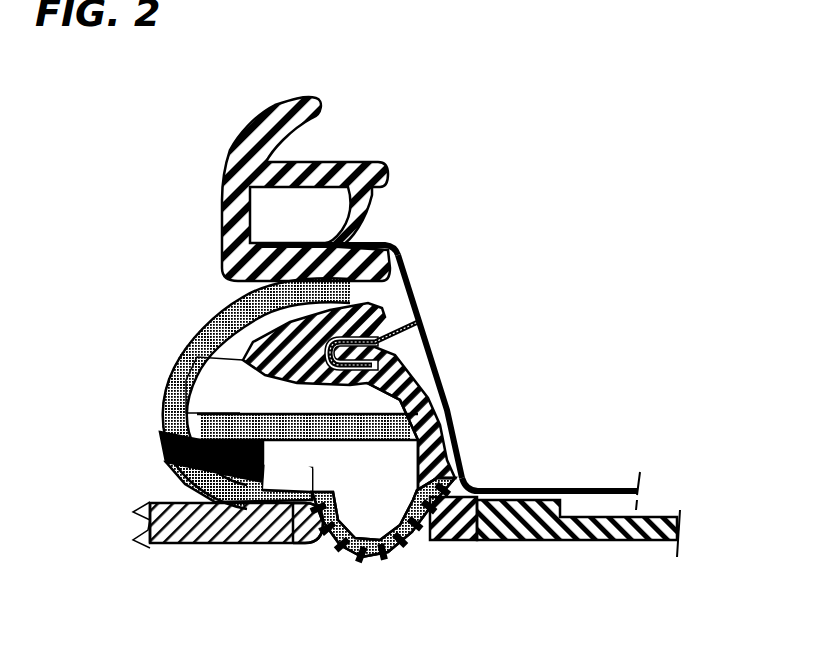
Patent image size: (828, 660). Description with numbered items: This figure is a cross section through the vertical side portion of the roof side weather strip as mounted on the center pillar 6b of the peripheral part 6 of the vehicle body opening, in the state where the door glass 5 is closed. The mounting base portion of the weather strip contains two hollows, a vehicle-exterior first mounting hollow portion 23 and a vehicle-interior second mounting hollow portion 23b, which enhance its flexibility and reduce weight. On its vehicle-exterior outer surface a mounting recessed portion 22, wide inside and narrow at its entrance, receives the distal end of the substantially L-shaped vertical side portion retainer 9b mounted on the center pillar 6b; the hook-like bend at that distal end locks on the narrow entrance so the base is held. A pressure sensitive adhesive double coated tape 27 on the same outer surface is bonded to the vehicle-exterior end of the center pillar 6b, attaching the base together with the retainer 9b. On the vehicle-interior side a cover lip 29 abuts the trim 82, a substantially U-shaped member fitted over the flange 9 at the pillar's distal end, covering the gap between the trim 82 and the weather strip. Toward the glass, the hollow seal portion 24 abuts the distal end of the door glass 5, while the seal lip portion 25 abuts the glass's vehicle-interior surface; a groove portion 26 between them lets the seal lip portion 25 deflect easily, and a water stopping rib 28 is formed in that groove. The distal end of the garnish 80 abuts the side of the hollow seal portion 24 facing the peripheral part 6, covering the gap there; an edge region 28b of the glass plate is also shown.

The trim 82 is at (247, 130).
The flange 9 is at (352, 245).
The vertical side portion retainer 9b is at (413, 310).
The mounting recessed portion 22 is at (395, 352).
The center pillar 6b is at (412, 372).
The pressure sensitive adhesive double coated tape 27 is at (440, 426).
The peripheral part of the vehicle body opening 6 is at (540, 487).
The cover lip 29 is at (250, 288).
The first mounting hollow portion 23 is at (283, 392).
The second mounting hollow portion 23b is at (207, 388).
The groove portion 26 is at (190, 437).
The water stopping rib 28 is at (200, 460).
The seal lip portion 25 is at (228, 492).
The door glass 5 is at (190, 553).
The edge 28b is at (293, 553).
The hollow seal portion 24 is at (383, 557).
The garnish 80 is at (593, 550).